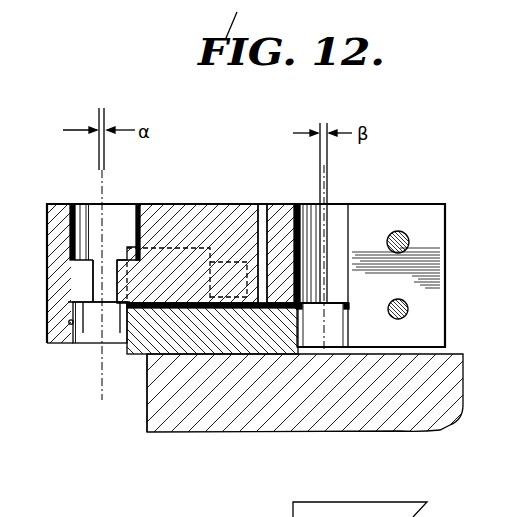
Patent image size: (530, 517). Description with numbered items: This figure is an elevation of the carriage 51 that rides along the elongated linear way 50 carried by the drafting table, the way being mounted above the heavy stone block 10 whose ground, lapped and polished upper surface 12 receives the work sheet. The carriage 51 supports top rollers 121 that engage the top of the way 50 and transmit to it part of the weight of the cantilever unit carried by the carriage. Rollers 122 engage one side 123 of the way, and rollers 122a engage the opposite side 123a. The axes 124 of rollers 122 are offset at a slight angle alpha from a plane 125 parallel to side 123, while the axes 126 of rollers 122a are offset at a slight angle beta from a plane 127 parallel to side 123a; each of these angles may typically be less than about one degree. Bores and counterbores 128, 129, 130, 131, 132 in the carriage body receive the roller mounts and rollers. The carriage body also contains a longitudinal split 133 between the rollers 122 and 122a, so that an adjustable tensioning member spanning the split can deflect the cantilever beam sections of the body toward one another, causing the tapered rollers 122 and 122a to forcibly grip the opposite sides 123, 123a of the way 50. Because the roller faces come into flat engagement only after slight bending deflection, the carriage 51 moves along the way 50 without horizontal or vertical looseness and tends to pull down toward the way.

The stone block 10 is at (323, 420).
The upper surface 12 is at (215, 357).
The way 50 is at (207, 328).
The carriage 51 is at (234, 200).
The top rollers 121 is at (178, 250).
The rollers 122 is at (84, 343).
The rollers 122a is at (350, 328).
The side of way 123 is at (120, 332).
The opposite side of way 123a is at (297, 330).
The axes 124 is at (100, 153).
The plane 125 is at (105, 150).
The axes 126 is at (330, 190).
The plane 127 is at (320, 150).
The bore 128 is at (95, 273).
The bore 129 is at (72, 204).
The bore 130 is at (69, 322).
The bore 131 is at (347, 234).
The bore 132 is at (353, 302).
The longitudinal split 133 is at (264, 205).